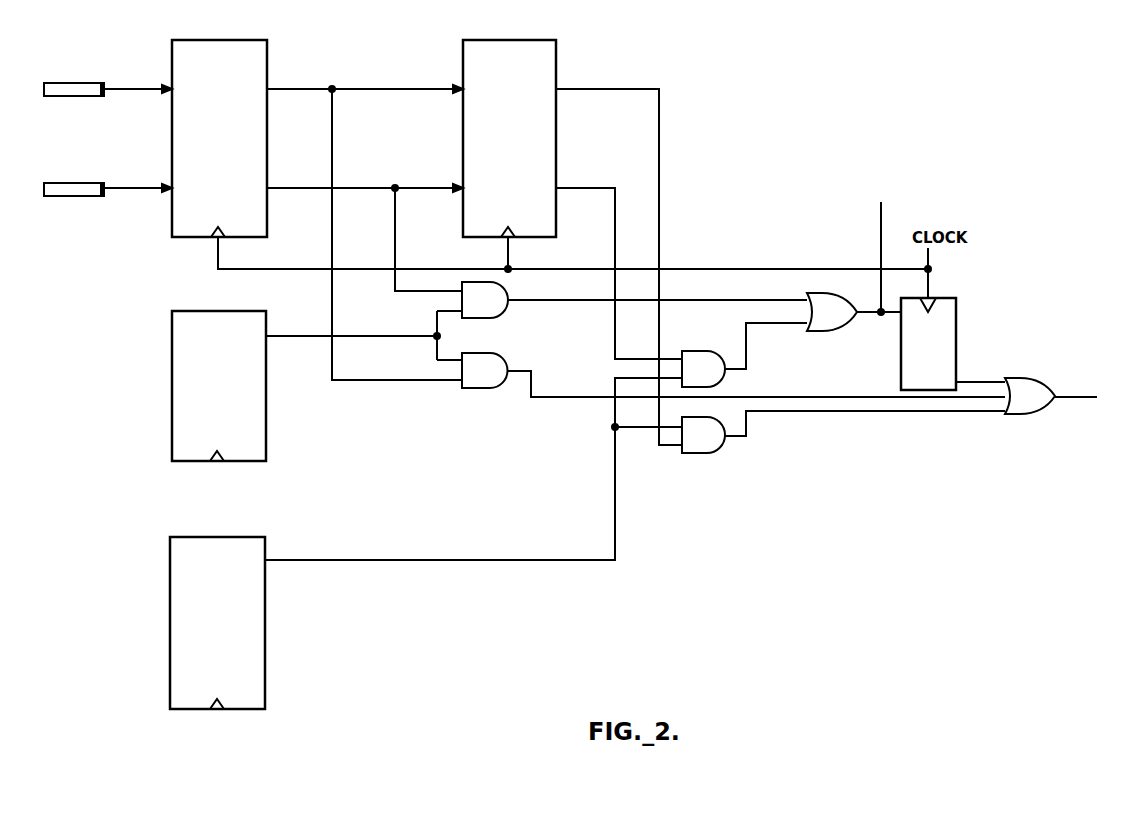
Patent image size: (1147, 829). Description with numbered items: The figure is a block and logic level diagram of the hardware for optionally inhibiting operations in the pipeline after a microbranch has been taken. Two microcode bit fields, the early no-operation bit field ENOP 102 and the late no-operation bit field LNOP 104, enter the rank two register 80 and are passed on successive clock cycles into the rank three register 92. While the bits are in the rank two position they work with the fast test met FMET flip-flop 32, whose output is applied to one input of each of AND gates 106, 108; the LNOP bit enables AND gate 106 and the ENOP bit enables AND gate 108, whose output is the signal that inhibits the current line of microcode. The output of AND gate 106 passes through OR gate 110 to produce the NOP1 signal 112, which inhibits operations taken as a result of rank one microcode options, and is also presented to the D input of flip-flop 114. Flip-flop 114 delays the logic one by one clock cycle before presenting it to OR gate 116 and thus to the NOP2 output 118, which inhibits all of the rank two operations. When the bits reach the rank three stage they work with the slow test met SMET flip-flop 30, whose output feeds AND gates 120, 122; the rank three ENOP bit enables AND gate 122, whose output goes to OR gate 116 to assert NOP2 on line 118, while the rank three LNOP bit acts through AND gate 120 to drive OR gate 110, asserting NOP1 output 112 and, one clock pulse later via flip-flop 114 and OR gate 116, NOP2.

The SMET flip-flop 30 is at (240, 537).
The FMET flip-flop 32 is at (247, 311).
The rank two register 80 is at (243, 40).
The rank three register 92 is at (530, 40).
The early no-operation bit field (ENOP) 102 is at (70, 97).
The late no-operation bit field (LNOP) 104 is at (78, 197).
The AND gate 106 is at (503, 309).
The AND gate 108 is at (503, 360).
The OR gate 110 is at (838, 298).
The NOP1 signal 112 is at (881, 212).
The flip-flop 114 is at (948, 298).
The OR gate 116 is at (1045, 364).
The NOP2 output 118 is at (1066, 395).
The AND gate 120 is at (697, 351).
The AND gate 122 is at (697, 453).